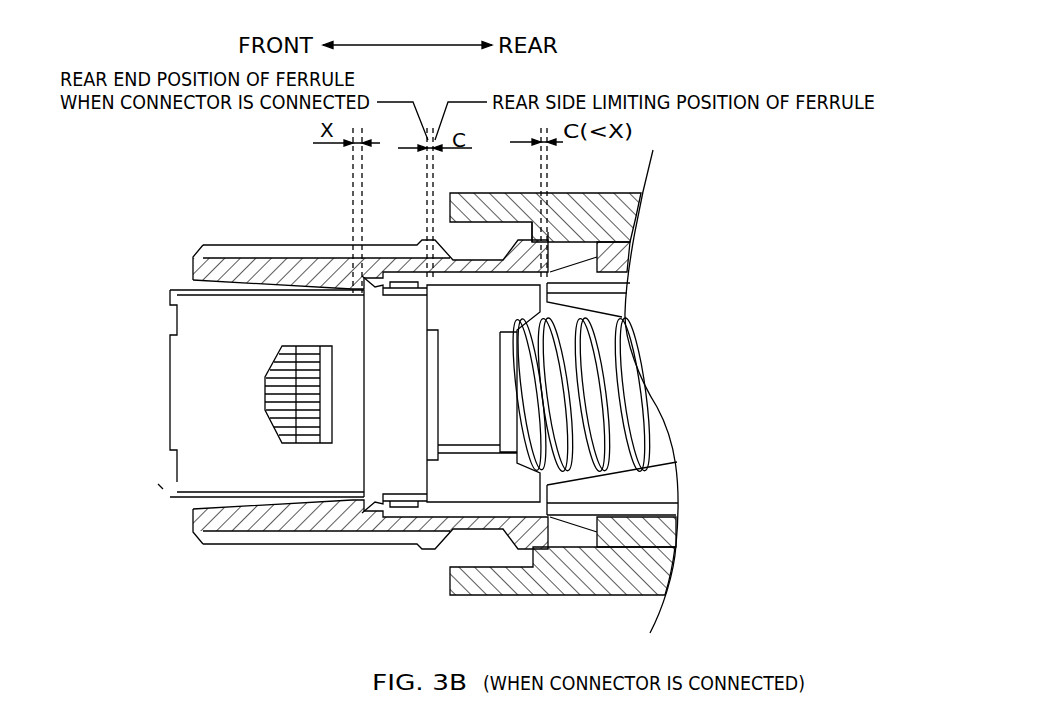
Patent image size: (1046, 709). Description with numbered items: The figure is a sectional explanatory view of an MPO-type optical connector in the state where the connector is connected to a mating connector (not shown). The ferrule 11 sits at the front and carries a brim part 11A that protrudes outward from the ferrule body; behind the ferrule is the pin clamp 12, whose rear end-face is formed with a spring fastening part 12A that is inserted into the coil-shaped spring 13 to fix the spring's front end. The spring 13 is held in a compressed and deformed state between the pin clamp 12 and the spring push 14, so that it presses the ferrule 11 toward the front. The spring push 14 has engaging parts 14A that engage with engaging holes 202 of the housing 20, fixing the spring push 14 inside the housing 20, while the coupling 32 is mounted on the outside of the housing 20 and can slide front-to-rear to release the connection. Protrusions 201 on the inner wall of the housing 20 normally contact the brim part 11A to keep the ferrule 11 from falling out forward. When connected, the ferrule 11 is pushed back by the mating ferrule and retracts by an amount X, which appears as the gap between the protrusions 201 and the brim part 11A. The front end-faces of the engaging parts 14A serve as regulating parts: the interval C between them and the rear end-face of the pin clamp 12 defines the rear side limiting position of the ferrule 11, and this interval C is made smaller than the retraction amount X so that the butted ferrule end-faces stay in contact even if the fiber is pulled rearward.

The ferrule 11 is at (182, 397).
The brim part 11A is at (370, 282).
The pin clamp 12 is at (418, 547).
The spring fastening part 12A is at (450, 545).
The spring 13 is at (647, 422).
The spring push 14 is at (660, 399).
The engaging parts 14A is at (602, 298).
The housing 20 is at (283, 272).
The protrusion 201 is at (340, 282).
The engaging hole 202 is at (598, 247).
The coupling 32 is at (560, 240).